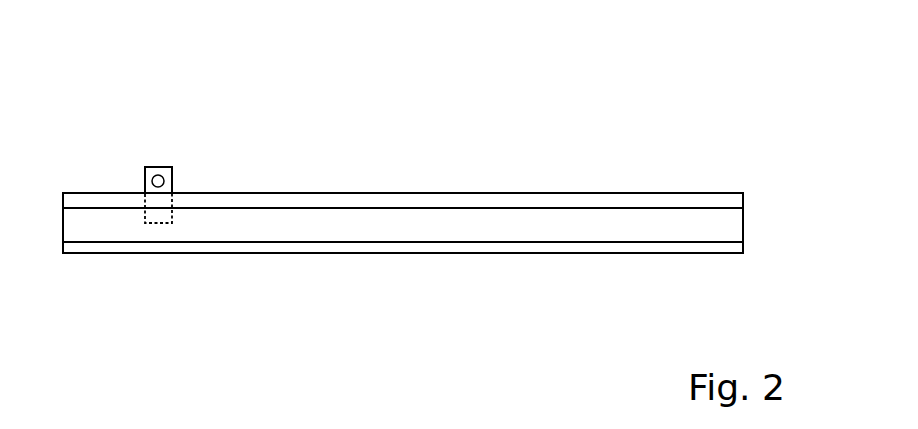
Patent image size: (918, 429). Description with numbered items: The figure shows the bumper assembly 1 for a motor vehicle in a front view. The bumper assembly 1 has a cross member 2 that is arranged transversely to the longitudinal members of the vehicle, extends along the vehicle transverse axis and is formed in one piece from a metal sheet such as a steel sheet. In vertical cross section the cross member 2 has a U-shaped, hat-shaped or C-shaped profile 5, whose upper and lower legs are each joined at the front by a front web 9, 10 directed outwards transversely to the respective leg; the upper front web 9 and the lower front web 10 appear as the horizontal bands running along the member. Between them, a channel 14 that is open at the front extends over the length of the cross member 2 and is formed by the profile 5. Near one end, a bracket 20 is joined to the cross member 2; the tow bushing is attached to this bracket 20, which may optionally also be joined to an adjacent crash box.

The bumper assembly 1 is at (513, 136).
The cross member 2 is at (380, 193).
The profile 5 is at (270, 253).
The upper front web 9 is at (620, 202).
The lower front web 10 is at (600, 248).
The channel 14 is at (463, 235).
The bracket 20 is at (173, 180).